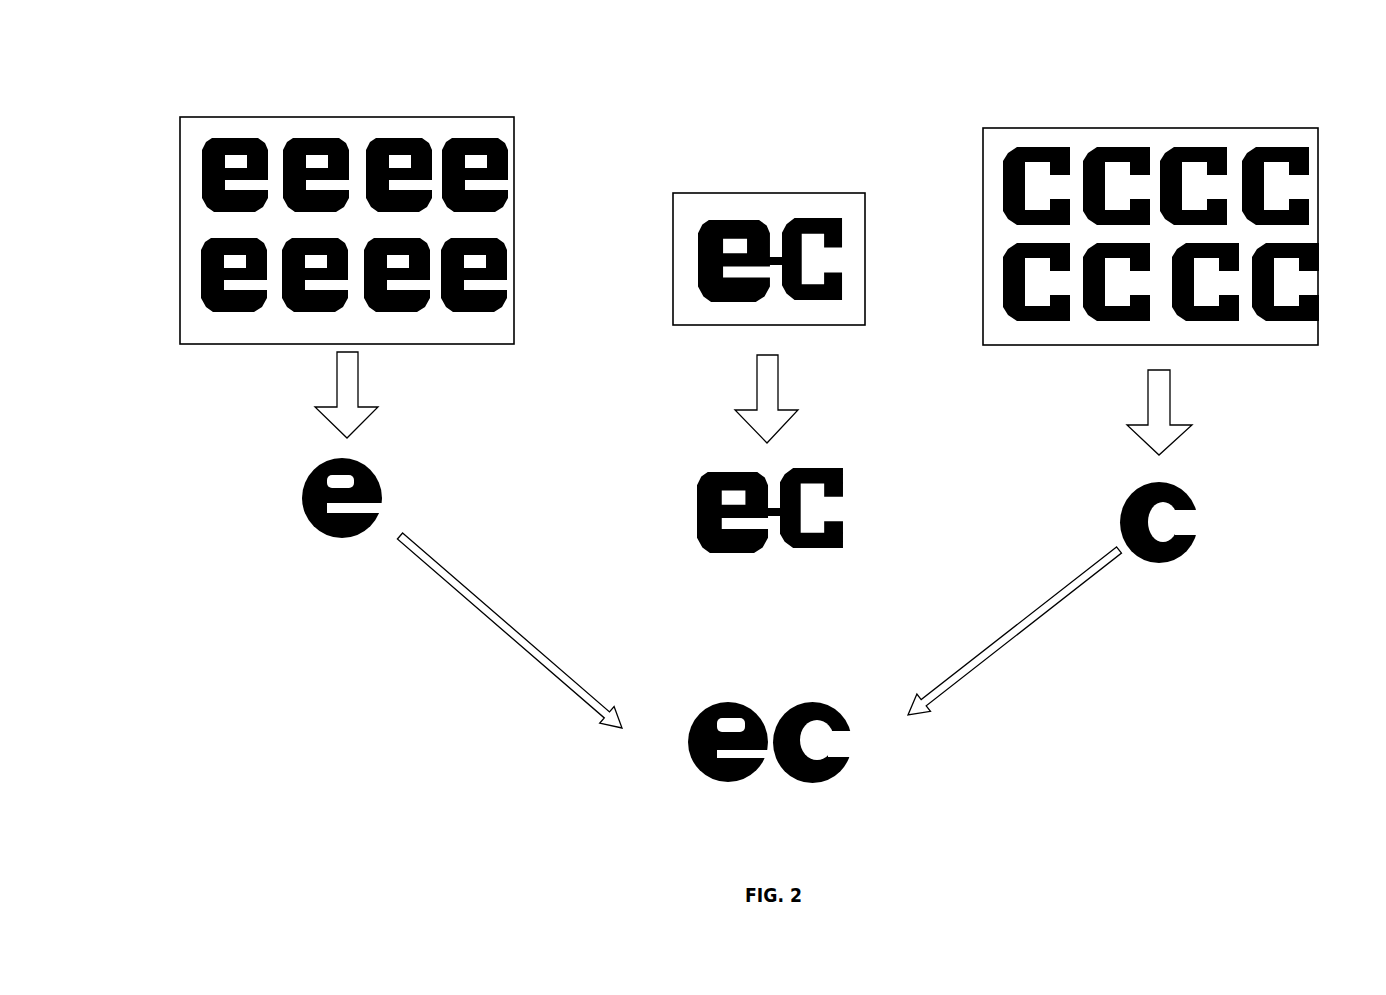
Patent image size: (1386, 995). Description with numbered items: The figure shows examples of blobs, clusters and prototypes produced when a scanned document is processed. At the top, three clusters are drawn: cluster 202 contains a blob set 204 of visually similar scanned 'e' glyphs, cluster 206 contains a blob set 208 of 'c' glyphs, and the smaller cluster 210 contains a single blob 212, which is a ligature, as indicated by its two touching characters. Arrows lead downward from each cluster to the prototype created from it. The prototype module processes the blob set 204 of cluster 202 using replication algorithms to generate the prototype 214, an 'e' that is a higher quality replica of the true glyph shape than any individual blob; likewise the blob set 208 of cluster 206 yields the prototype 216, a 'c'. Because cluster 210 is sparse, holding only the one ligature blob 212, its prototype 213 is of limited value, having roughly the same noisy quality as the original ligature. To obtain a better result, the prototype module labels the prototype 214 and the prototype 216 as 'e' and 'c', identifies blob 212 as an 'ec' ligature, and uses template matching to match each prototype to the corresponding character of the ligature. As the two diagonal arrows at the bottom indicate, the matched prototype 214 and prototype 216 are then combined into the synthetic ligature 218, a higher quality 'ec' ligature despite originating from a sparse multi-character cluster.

The cluster 202 is at (268, 117).
The blob set 204 is at (464, 140).
The cluster 206 is at (1078, 128).
The blob set 208 is at (1297, 157).
The cluster 210 is at (841, 195).
The blob 212 is at (842, 280).
The prototype 213 is at (843, 500).
The prototype 214 is at (300, 522).
The prototype 216 is at (1188, 552).
The synthetic ligature 218 is at (685, 775).